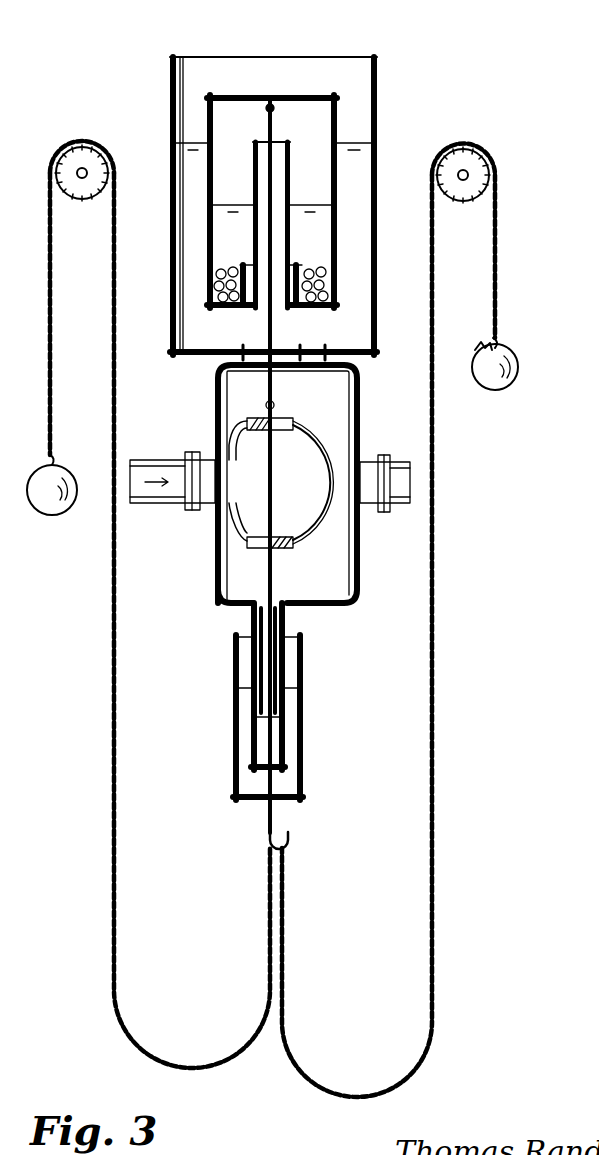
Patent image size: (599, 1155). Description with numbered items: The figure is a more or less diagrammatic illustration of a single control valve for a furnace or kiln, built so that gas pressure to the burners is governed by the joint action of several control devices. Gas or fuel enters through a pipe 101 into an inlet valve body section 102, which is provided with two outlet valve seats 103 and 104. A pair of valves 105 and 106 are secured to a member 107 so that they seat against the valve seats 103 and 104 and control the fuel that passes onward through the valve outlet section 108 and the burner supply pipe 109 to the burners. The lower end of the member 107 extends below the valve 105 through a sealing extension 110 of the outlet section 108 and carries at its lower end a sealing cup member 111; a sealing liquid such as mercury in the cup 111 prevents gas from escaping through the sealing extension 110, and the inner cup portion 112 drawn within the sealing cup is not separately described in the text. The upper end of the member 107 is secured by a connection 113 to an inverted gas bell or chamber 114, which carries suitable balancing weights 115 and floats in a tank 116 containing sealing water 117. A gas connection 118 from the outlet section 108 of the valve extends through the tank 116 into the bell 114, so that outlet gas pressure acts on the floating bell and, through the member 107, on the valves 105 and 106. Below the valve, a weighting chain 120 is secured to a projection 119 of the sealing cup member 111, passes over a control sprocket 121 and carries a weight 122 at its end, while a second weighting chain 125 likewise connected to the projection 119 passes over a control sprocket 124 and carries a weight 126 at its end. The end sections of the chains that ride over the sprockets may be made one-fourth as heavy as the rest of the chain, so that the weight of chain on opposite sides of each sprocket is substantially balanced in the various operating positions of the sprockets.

The pipe 101 is at (160, 460).
The inlet valve body section 102 is at (356, 520).
The outlet valve seat 103 is at (290, 548).
The outlet valve seat 104 is at (280, 418).
The valve 105 is at (245, 542).
The valve 106 is at (250, 432).
The member 107 is at (273, 470).
The valve outlet section 108 is at (390, 405).
The burner supply pipe 109 is at (412, 470).
The sealing extension 110 is at (250, 620).
The sealing cup member 111 is at (303, 760).
The inner cup 112 is at (290, 680).
The connection 113 is at (272, 100).
The inverted gas bell 114 is at (335, 115).
The balancing weights 115 is at (215, 290).
The tank 116 is at (377, 118).
The sealing water 117 is at (185, 130).
The gas connection 118 is at (338, 210).
The projection 119 is at (265, 835).
The weighting chain 120 is at (112, 1000).
The control sprocket 121 is at (92, 188).
The weight 122 is at (50, 518).
The control sprocket 124 is at (455, 195).
The weight 125 is at (287, 1000).
The right counterweight 126 is at (518, 368).